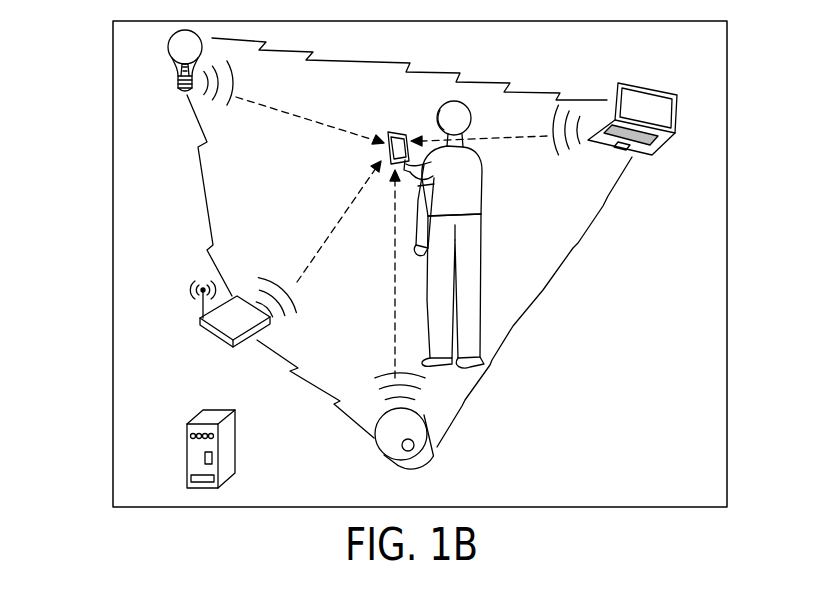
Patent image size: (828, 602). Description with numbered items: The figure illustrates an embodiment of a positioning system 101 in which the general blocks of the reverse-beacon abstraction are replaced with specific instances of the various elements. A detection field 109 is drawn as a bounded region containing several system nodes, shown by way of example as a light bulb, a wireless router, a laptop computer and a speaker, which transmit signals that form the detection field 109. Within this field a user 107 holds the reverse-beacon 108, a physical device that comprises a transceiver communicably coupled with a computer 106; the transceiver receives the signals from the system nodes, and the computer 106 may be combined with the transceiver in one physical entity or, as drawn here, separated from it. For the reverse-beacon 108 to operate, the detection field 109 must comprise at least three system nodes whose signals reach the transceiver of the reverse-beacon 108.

The networked environment / system 101 is at (58, 411).
The computer 106 is at (220, 450).
The user 107 is at (477, 203).
The reverse-beacon 108 is at (393, 130).
The detection field 109 is at (727, 132).